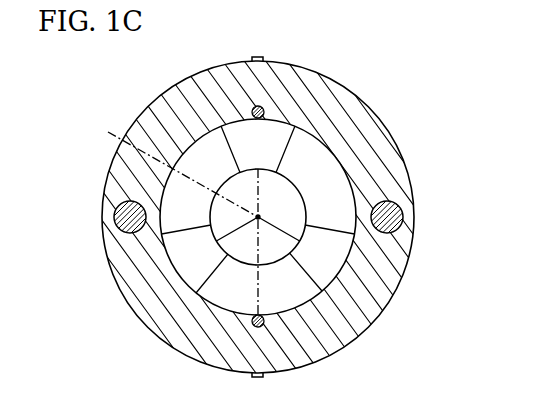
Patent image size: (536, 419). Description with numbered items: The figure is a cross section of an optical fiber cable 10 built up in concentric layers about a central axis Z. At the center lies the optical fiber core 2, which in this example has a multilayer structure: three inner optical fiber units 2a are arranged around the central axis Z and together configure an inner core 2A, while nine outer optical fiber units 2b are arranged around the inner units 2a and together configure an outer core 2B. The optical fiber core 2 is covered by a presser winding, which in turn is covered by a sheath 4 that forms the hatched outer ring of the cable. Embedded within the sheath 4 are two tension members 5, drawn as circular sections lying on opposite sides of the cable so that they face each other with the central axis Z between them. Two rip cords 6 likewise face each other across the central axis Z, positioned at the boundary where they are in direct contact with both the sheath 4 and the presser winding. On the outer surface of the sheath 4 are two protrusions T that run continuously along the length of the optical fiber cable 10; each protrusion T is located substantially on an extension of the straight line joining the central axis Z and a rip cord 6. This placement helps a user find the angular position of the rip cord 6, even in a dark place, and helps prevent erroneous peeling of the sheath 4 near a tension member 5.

The optical fiber cable 10 is at (347, 78).
The sheath 4 is at (172, 329).
The optical fiber core 2 is at (270, 216).
The inner core 2A is at (300, 192).
The outer core 2B is at (353, 254).
The optical fiber units (inner units) 2a is at (200, 290).
The optical fiber units (outer units) 2b is at (337, 272).
The tension member 5 is at (113, 218).
The rip cord 6 is at (257, 106).
The protrusion T is at (262, 58).
The central axis Z is at (175, 168).